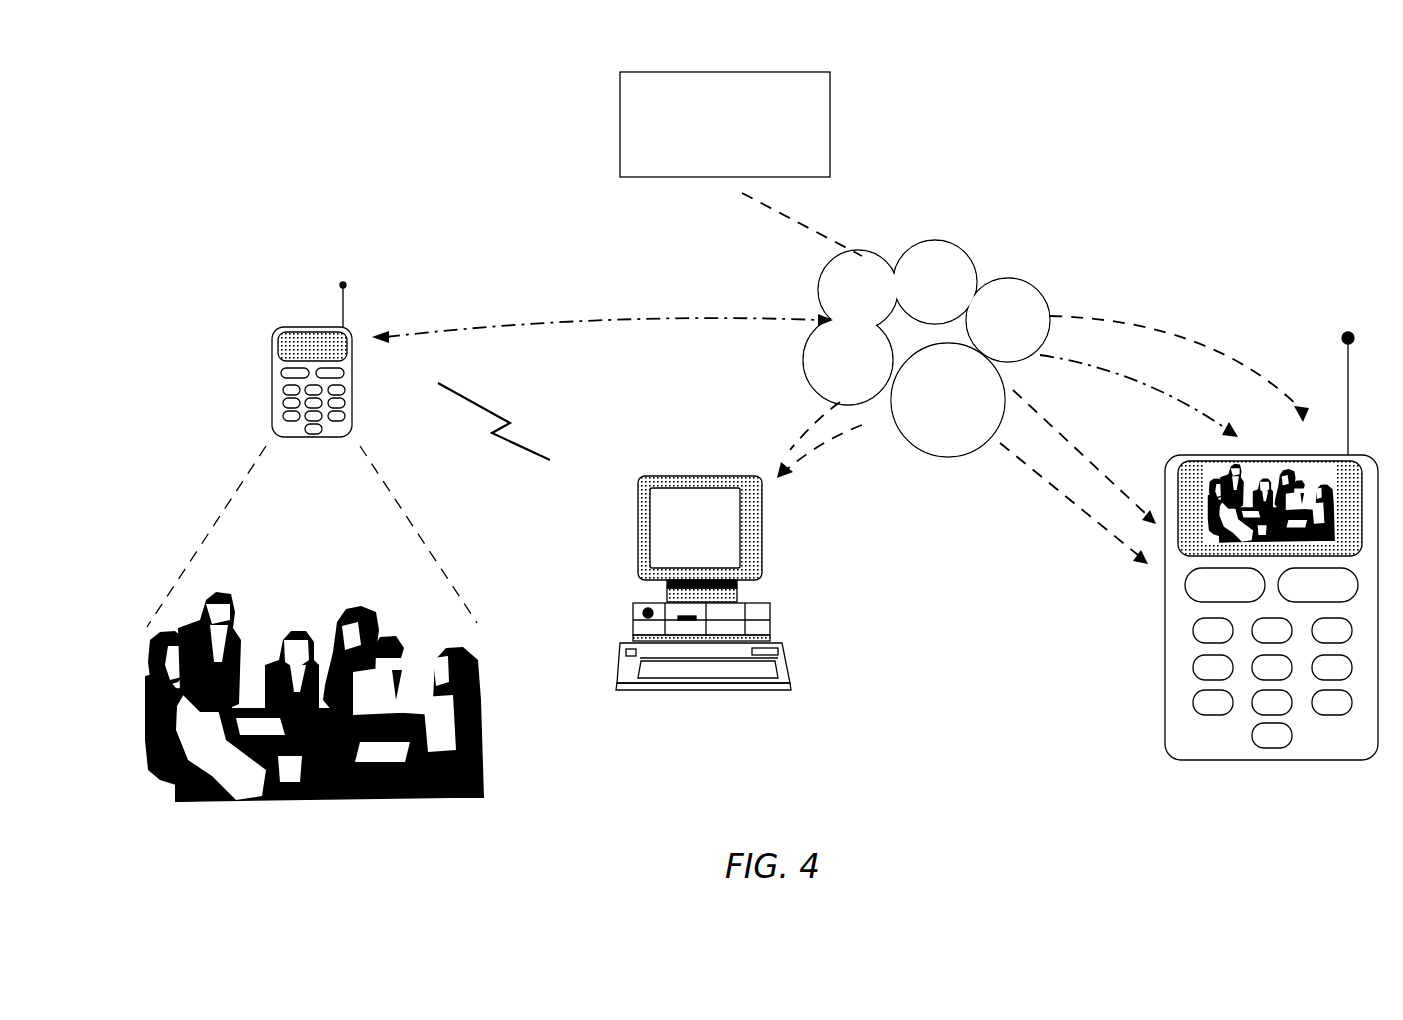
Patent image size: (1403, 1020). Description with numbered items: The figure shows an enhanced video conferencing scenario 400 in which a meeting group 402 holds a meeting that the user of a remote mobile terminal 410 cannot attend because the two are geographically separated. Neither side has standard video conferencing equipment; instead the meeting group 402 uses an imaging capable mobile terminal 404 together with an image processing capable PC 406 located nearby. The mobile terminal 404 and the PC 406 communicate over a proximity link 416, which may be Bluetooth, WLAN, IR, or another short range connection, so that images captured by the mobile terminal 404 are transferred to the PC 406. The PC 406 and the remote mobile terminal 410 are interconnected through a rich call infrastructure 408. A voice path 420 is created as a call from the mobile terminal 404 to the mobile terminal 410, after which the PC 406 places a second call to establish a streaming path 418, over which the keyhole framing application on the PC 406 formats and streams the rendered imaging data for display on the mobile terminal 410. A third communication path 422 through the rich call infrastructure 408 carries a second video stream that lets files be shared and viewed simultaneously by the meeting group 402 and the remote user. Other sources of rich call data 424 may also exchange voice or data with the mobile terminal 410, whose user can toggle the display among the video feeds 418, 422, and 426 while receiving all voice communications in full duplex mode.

The enhanced video conferencing scenario 400 is at (284, 174).
The meeting group 402 is at (483, 797).
The mobile terminal 404 is at (318, 327).
The PC 406 is at (700, 478).
The rich call infrastructure 408 is at (997, 270).
The mobile terminal 410 is at (1277, 760).
The proximity link 416 is at (475, 403).
The rich call path 418 is at (815, 408).
The voice path 420 is at (518, 318).
The third communication path 422 is at (1077, 517).
The other sources of rich call data 424 is at (777, 70).
The video feed 426 is at (1152, 330).